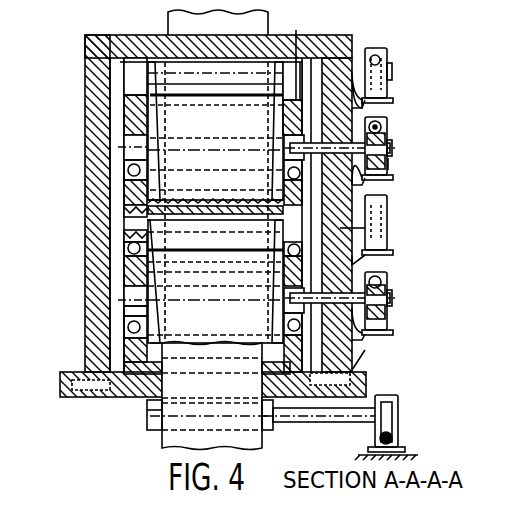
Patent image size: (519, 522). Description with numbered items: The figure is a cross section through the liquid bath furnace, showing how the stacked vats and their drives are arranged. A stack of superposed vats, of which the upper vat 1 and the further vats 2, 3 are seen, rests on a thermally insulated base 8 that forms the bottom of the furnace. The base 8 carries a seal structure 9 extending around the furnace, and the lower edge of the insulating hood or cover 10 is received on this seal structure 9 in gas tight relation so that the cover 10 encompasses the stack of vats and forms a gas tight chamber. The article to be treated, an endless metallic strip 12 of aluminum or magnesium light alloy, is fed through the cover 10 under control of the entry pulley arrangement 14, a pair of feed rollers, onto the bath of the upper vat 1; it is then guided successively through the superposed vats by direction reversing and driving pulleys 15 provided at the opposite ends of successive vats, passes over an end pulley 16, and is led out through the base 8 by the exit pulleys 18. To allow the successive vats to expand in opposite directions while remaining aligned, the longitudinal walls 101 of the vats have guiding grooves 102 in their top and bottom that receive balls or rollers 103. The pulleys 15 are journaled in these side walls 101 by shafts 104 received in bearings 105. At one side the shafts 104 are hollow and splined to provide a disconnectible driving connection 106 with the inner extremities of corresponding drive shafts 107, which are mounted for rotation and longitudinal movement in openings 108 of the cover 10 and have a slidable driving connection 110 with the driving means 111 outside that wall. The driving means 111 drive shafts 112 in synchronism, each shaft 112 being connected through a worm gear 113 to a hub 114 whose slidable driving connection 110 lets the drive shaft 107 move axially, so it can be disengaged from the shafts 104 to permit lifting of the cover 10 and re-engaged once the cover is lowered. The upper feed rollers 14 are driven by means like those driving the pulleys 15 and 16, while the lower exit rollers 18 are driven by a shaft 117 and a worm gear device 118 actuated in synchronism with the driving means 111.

The upper vat 1 is at (124, 105).
The vat 2 is at (127, 181).
The vat 3 is at (124, 290).
The thermally insulated base 8 is at (62, 385).
The seal structure 9 is at (78, 380).
The insulating hood or cover 10 is at (322, 130).
The endless metallic strip 12 is at (167, 21).
The entry pulley arrangement 14 is at (135, 66).
The direction reversing and driving pulleys 15 is at (215, 138).
The end pulley 16 is at (215, 281).
The exit pulleys 18 is at (150, 422).
The longitudinal walls 101 is at (127, 270).
The guiding grooves 102 is at (127, 208).
The balls or rollers 103 is at (127, 172).
The shafts 104 is at (124, 148).
The bearings 105 is at (130, 133).
The disconnectible driving connection 106 is at (295, 53).
The drive shafts 107 is at (372, 46).
The openings 108 is at (352, 350).
The slidable driving connection 110 is at (392, 160).
The driving means 111 is at (387, 52).
The shafts 112 is at (387, 130).
The worm gear 113 is at (380, 65).
The hub 114 is at (392, 168).
The shaft 117 is at (316, 423).
The worm gear device 118 is at (392, 438).